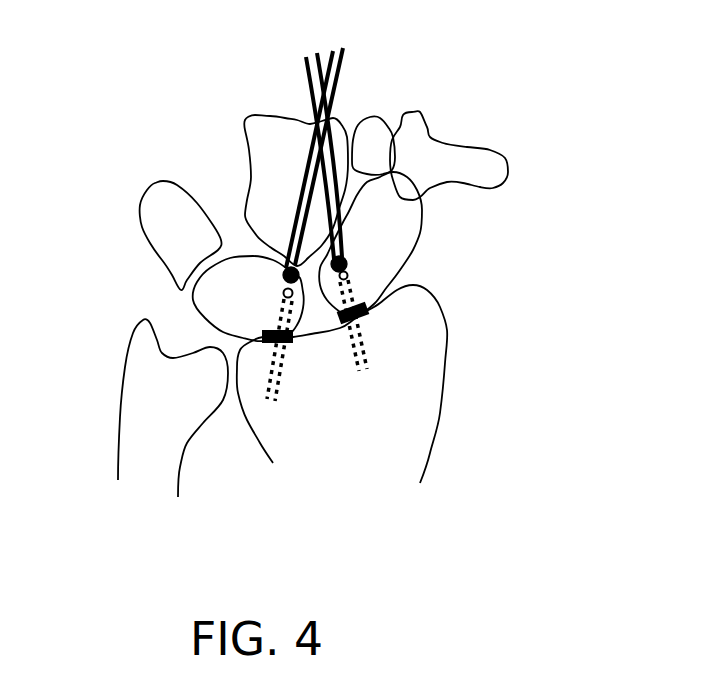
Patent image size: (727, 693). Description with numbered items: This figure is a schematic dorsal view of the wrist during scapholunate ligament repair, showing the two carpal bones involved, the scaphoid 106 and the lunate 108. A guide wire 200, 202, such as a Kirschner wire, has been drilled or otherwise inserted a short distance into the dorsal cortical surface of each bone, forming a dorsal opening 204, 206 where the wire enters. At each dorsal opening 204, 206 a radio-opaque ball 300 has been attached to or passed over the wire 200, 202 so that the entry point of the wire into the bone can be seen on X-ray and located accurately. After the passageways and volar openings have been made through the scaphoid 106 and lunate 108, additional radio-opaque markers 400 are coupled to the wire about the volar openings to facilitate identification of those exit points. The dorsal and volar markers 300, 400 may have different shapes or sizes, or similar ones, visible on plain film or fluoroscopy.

The scaphoid 106 is at (406, 234).
The lunate 108 is at (240, 299).
The guide wire 200 is at (302, 79).
The guide wire 202 is at (343, 60).
The dorsal opening 204 is at (350, 277).
The dorsal opening 206 is at (283, 291).
The ball 300 is at (287, 270).
The radio-opaque marker 400 is at (265, 337).